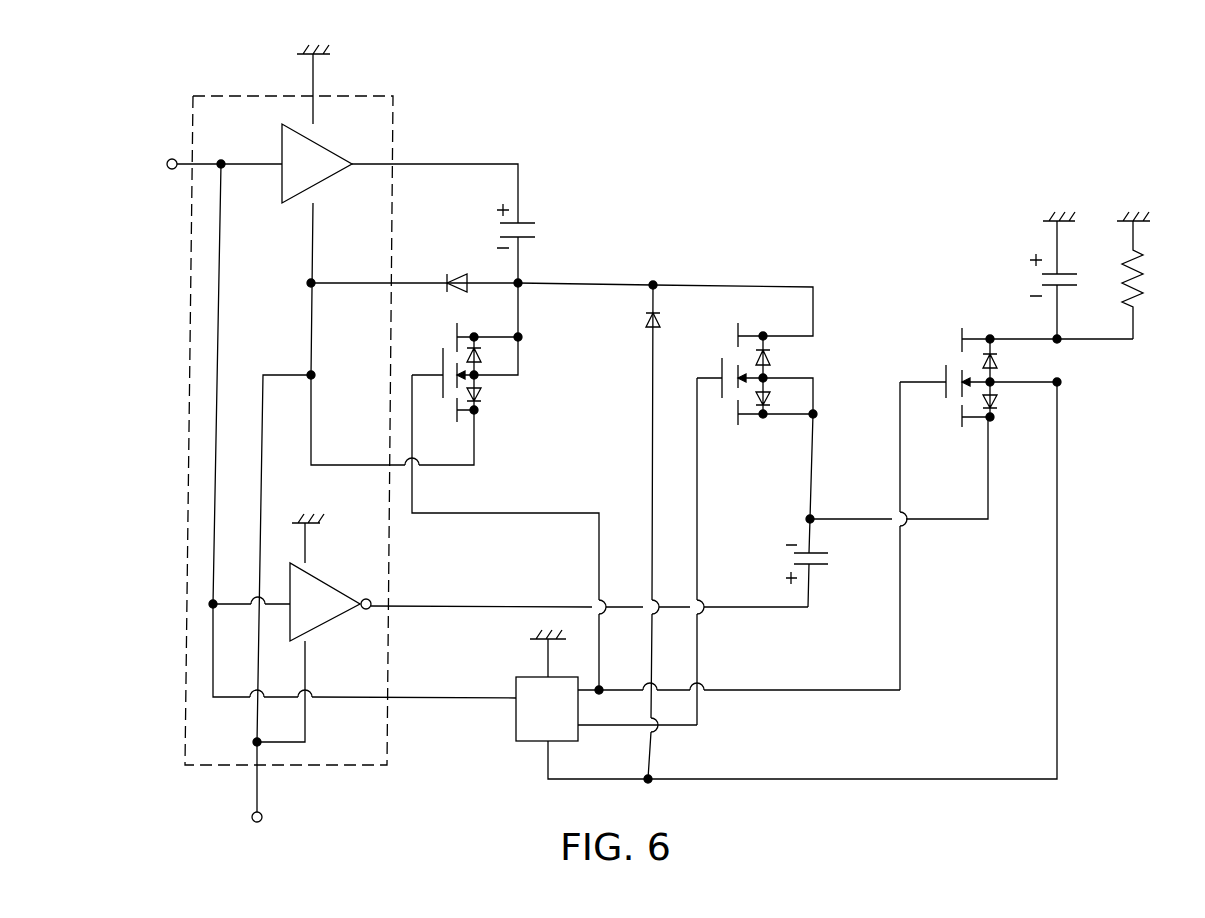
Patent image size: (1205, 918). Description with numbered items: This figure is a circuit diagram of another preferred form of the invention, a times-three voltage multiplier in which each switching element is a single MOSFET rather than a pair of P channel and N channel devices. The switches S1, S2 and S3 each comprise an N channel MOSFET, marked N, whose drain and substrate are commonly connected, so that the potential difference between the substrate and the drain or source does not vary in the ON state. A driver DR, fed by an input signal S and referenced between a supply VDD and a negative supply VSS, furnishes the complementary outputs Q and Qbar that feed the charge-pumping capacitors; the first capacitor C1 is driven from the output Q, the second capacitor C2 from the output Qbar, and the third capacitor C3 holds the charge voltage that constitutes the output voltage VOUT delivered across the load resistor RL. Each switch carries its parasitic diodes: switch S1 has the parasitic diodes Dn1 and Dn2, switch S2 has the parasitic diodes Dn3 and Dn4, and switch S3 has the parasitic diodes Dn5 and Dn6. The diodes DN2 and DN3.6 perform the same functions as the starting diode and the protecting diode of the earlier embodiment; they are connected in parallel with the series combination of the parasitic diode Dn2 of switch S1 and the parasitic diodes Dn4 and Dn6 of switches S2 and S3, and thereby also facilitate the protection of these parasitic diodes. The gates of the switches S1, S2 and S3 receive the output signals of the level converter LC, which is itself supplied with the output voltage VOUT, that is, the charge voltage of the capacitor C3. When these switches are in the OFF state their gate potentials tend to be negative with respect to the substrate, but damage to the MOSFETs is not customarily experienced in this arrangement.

The driver circuit DR is at (240, 100).
The input signal terminal S is at (214, 164).
The supply voltage (ground) VDD is at (368, 78).
The buffer output Q is at (400, 294).
The first capacitor C1 is at (536, 243).
The diode DN2' DN2 is at (416, 262).
The switch S1' S1 is at (509, 486).
The diode Dn1 is at (485, 356).
The parasitic diode Dn2 is at (485, 394).
The N channel MOSFET N is at (721, 384).
The diode DN3,6 DN3.6 is at (631, 532).
The switch S2' S2 is at (768, 512).
The diode Dn3 is at (776, 359).
The parasitic diode Dn4 is at (776, 398).
The second capacitor C2 is at (887, 510).
The switch S3' S3 is at (1016, 499).
The diode Dn5 is at (1003, 362).
The parasitic diode Dn6 is at (1003, 399).
The capacitor C3 is at (1067, 277).
The load resistor RL is at (1145, 275).
The output voltage VOUT is at (823, 580).
The inverter output Q-bar Qbar is at (431, 562).
The negative supply terminal - VSS is at (245, 793).
The level converter LC is at (552, 714).